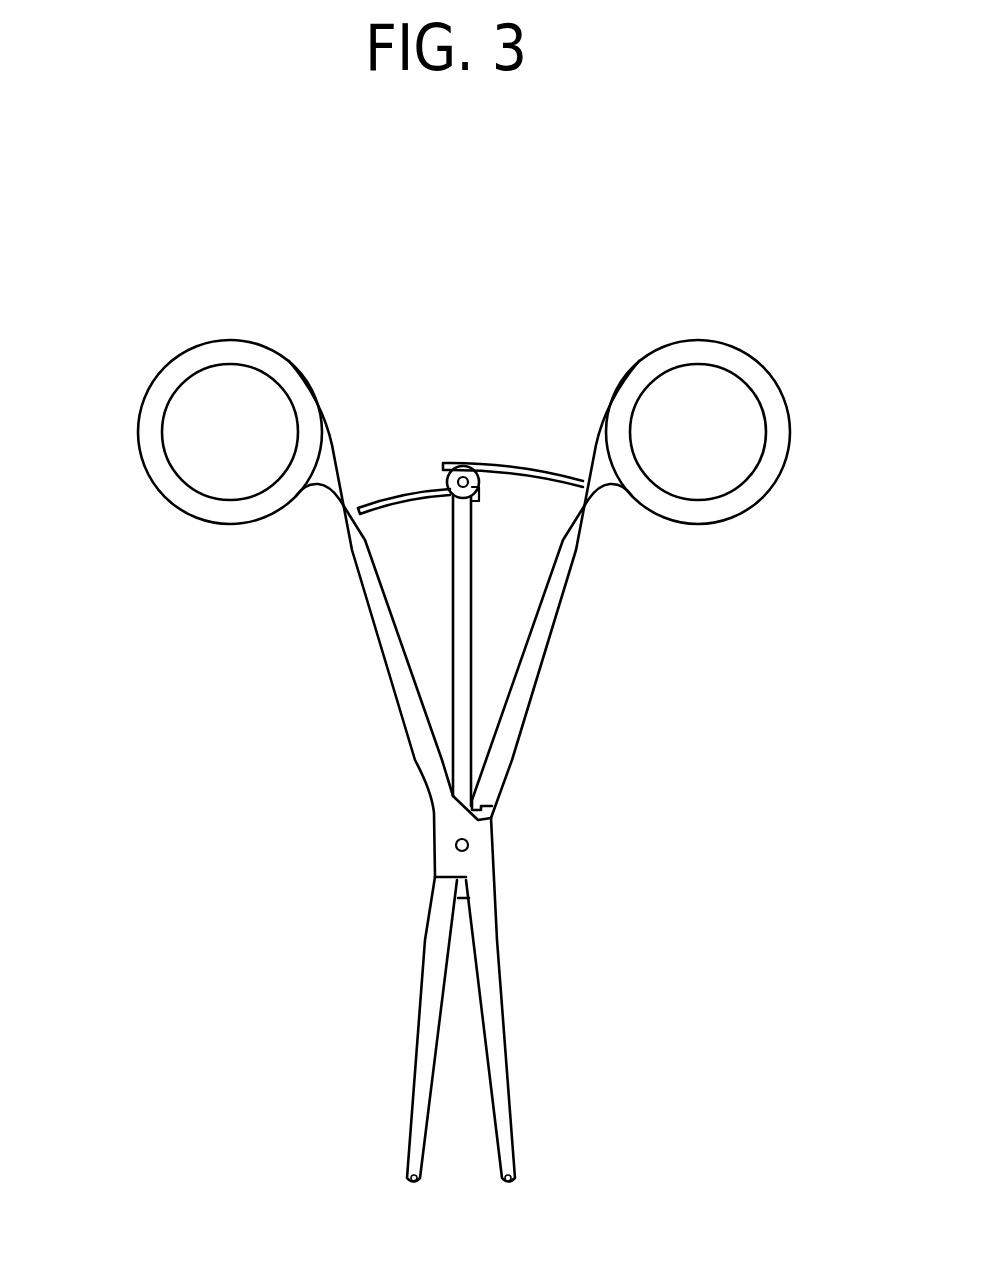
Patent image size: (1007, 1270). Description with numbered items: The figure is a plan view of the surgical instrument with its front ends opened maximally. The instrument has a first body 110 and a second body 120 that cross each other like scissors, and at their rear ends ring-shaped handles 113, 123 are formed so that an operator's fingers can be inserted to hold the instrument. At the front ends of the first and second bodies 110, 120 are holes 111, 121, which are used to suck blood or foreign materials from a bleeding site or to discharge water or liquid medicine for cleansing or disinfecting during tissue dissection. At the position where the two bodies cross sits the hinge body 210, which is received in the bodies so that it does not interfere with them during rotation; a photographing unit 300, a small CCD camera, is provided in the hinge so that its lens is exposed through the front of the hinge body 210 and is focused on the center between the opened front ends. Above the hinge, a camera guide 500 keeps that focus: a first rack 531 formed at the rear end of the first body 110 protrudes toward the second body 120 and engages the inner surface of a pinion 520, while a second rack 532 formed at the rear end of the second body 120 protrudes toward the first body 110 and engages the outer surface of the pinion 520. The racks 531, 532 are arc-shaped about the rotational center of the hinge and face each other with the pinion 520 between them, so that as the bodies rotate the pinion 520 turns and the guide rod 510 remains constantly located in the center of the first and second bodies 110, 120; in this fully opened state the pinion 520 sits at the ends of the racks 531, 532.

The first body 110 is at (330, 764).
The hole 111 is at (511, 1178).
The handle 113 is at (148, 428).
The second body 120 is at (606, 764).
The hole 121 is at (407, 1178).
The handle 123 is at (788, 443).
The hinge body 210 is at (470, 882).
The photographing unit 300 is at (468, 898).
The camera guide 500 is at (482, 564).
The guide rod 510 is at (466, 612).
The pinion 520 is at (456, 466).
The first rack 531 is at (368, 503).
The second rack 532 is at (533, 465).